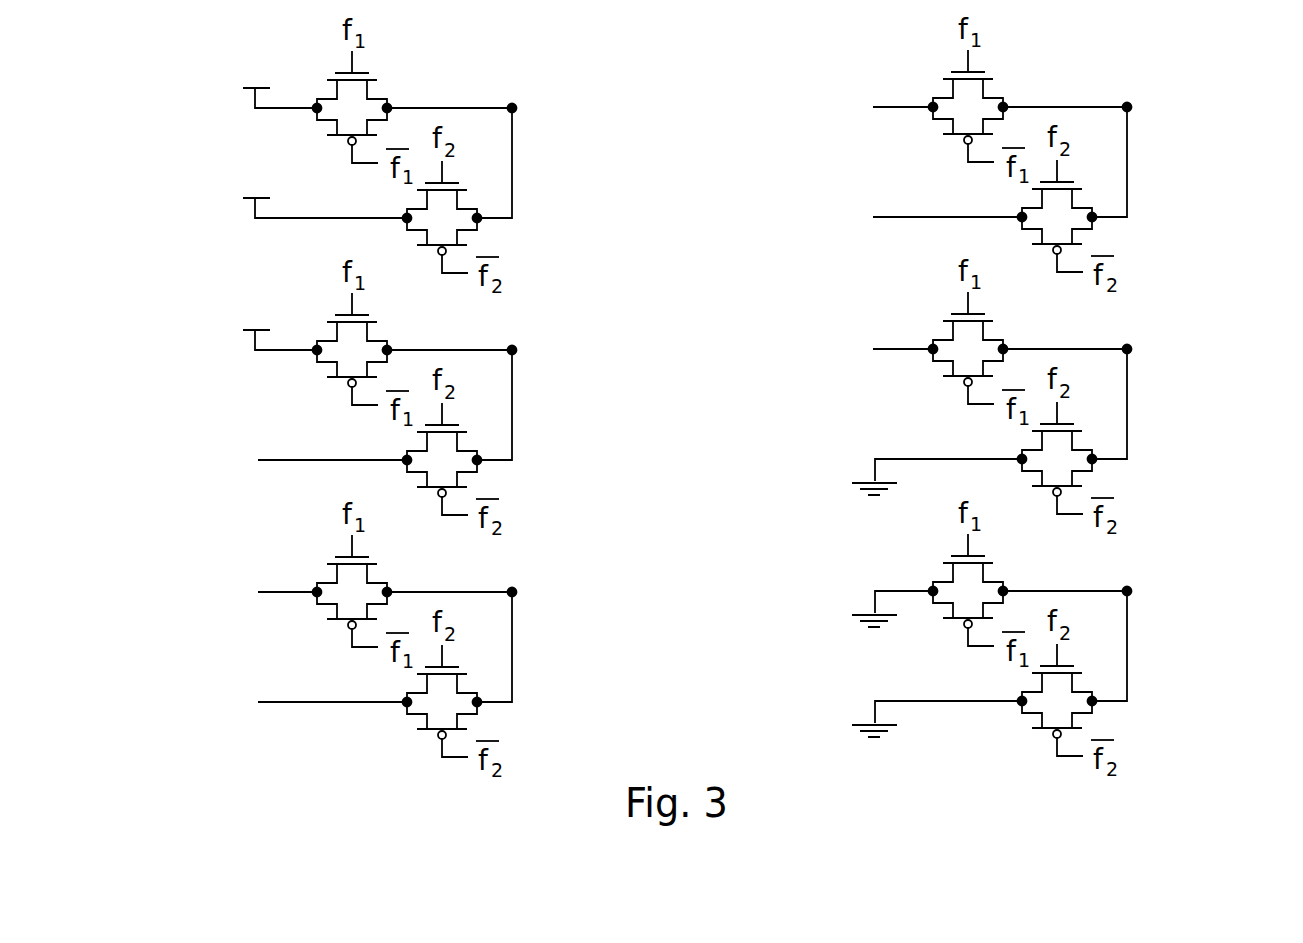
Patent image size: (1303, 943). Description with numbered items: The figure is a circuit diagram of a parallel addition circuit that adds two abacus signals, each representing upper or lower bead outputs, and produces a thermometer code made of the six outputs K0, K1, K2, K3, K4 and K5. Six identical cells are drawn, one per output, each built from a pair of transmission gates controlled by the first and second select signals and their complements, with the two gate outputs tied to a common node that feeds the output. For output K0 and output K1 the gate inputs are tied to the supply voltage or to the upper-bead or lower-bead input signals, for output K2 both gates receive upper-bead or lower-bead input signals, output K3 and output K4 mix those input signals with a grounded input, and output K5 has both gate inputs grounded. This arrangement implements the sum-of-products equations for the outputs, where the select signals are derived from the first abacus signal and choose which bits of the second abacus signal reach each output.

The thermometer code output K0 is at (512, 108).
The thermometer code output K1 is at (512, 350).
The thermometer code output K2 is at (512, 592).
The thermometer code output K3 is at (1127, 107).
The thermometer code output K4 is at (1127, 349).
The thermometer code output K5 is at (1127, 591).